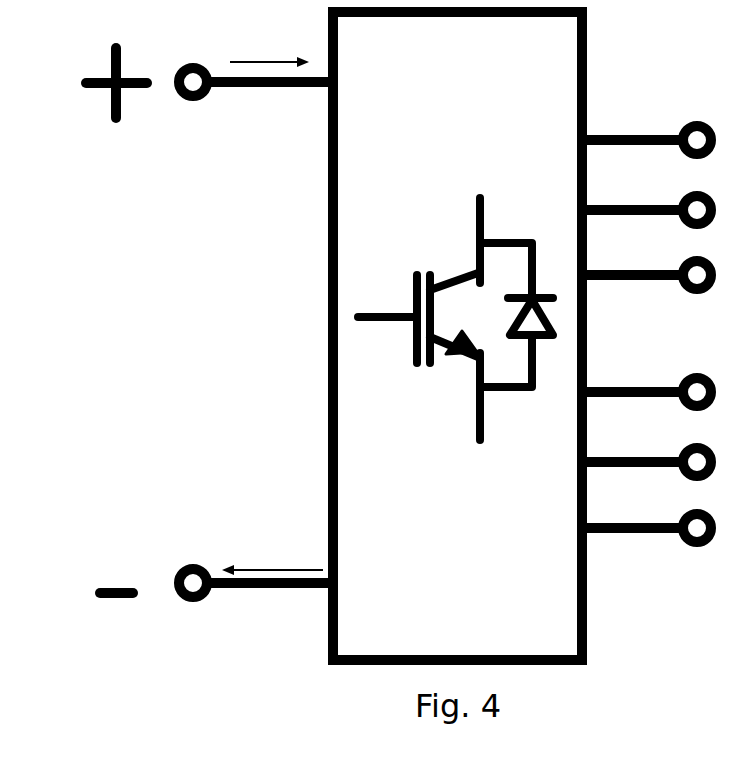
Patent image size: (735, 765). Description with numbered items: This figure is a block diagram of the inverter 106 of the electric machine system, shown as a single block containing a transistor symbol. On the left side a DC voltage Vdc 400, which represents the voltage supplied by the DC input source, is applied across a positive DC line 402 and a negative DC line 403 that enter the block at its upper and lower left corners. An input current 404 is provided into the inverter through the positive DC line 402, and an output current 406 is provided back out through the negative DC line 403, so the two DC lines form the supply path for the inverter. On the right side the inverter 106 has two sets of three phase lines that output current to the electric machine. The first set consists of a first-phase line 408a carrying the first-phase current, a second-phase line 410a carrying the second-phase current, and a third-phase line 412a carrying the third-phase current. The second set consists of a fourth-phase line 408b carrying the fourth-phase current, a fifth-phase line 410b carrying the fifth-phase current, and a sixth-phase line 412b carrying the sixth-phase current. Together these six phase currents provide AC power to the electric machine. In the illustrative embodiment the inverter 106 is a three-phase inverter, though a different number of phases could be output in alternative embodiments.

The inverter 106 is at (533, 629).
The Vdc 400 is at (157, 340).
The positive DC line 402 is at (219, 75).
The negative DC line 403 is at (227, 592).
The input current 404 is at (269, 52).
The output current 406 is at (272, 559).
The first-phase line 408a is at (617, 135).
The second-phase line 410a is at (602, 216).
The third-phase line 412a is at (598, 281).
The fourth-phase line 408b is at (675, 383).
The fifth-phase line 410b is at (620, 467).
The sixth-phase line 412b is at (633, 533).